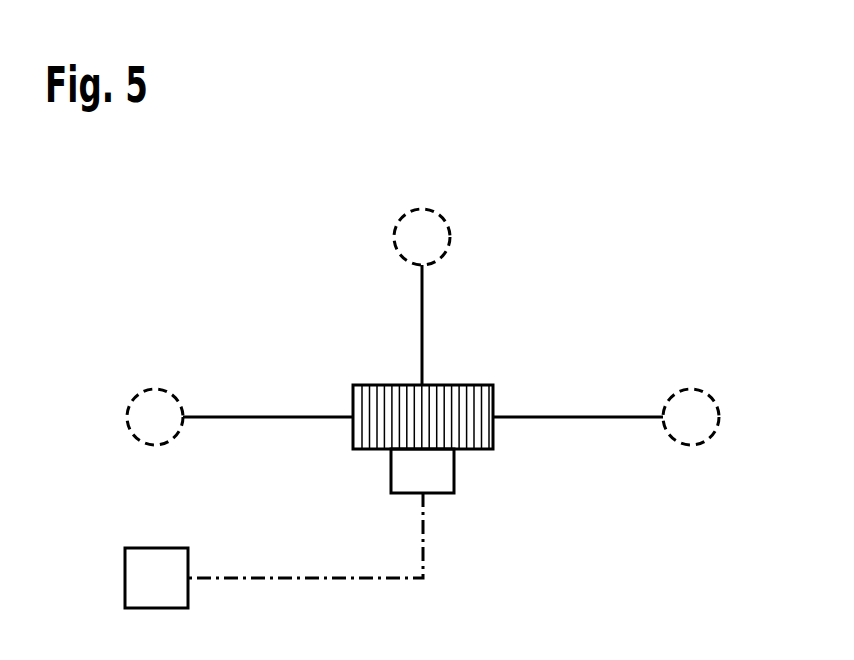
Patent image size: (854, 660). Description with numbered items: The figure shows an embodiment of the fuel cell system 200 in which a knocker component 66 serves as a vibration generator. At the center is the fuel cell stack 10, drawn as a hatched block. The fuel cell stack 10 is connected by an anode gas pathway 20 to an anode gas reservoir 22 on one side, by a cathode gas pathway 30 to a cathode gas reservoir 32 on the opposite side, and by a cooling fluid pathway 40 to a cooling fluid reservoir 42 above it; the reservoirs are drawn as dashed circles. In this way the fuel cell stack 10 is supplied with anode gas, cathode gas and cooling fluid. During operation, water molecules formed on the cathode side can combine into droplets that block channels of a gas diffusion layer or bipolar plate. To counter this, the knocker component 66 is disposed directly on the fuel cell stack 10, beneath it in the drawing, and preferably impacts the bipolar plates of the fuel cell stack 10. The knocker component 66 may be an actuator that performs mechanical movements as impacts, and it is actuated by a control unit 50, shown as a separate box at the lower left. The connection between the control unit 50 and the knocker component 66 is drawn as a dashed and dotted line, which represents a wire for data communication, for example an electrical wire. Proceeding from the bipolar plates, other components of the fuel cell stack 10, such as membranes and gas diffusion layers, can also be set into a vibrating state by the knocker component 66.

The fuel cell system 200 is at (678, 172).
The fuel cell stack 10 is at (385, 385).
The anode gas pathway 20 is at (273, 417).
The anode gas reservoir 22 is at (157, 389).
The cathode gas pathway 30 is at (577, 417).
The cathode gas reservoir 32 is at (691, 389).
The cooling fluid pathway 40 is at (423, 292).
The cooling fluid reservoir 42 is at (450, 229).
The knocker component 66 is at (455, 473).
The control unit 50 is at (125, 577).